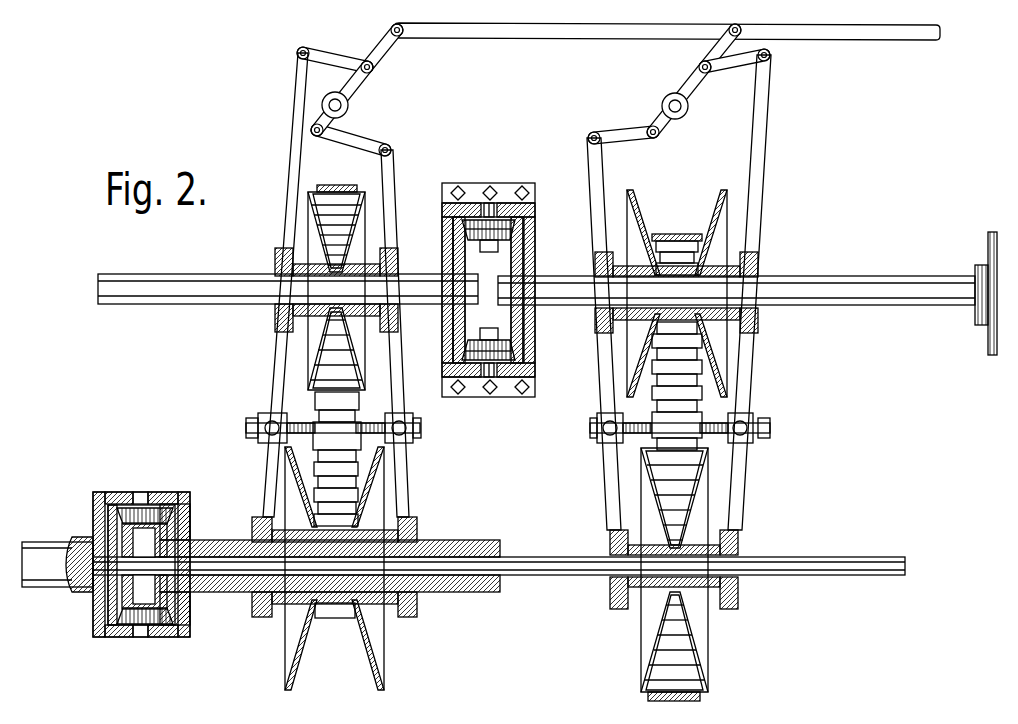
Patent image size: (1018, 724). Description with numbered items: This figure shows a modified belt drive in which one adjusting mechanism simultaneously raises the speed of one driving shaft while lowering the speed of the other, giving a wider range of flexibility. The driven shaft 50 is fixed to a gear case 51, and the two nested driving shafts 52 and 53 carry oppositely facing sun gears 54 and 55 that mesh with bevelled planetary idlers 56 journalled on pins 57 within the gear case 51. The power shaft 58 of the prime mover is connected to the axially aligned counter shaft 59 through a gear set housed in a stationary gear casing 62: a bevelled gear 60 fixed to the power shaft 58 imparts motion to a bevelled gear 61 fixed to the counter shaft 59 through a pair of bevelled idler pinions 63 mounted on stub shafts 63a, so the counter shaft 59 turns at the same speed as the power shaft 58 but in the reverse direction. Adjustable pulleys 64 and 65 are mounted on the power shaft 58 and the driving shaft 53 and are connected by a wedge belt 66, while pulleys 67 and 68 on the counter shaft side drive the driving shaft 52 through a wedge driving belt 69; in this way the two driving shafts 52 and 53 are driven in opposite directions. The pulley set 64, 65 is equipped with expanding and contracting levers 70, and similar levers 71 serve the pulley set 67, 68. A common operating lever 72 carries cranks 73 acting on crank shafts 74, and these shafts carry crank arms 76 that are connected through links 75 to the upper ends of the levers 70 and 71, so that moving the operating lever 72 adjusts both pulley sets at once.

The driven shaft 50 is at (45, 585).
The gear case 51 is at (180, 492).
The driving shaft 52 is at (444, 541).
The driving shaft 53 is at (448, 578).
The sun gear 54 is at (190, 522).
The sun gear 55 is at (108, 535).
The bevelled planetary idler 56 is at (132, 510).
The pin 57 is at (146, 492).
The power shaft 58 is at (820, 278).
The counter shaft 59 is at (195, 274).
The bevelled gear 60 is at (536, 250).
The bevelled gear 61 is at (453, 248).
The stationary gear casing 62 is at (515, 205).
The bevelled idler pinion 63 is at (474, 208).
The stub shaft 63a is at (489, 203).
The adjustable pulley 64 is at (727, 226).
The adjustable pulley 65 is at (700, 500).
The wedge belt 66 is at (740, 416).
The pulley 67 is at (306, 224).
The pulley 68 is at (380, 492).
The wedge driving belt 69 is at (356, 418).
The expanding and contracting lever 70 is at (600, 364).
The lever 71 is at (272, 372).
The common operating lever 72 is at (502, 23).
The crank 73 is at (388, 53).
The crank shaft 74 is at (342, 108).
The link 75 is at (342, 58).
The crank arm 76 is at (358, 84).